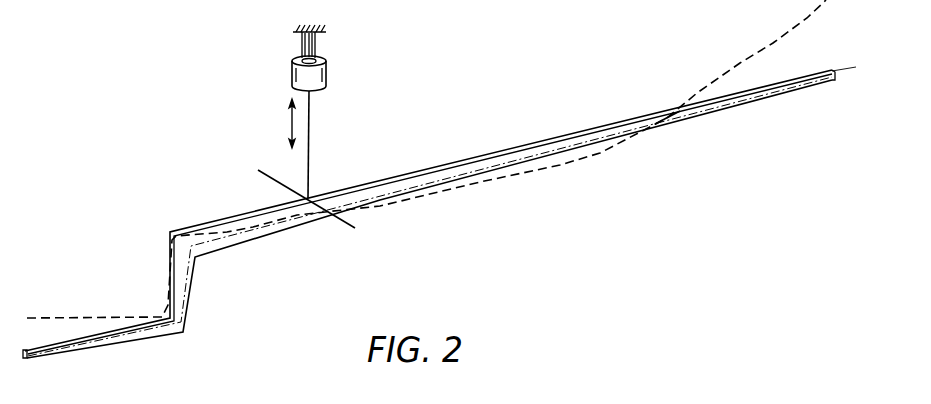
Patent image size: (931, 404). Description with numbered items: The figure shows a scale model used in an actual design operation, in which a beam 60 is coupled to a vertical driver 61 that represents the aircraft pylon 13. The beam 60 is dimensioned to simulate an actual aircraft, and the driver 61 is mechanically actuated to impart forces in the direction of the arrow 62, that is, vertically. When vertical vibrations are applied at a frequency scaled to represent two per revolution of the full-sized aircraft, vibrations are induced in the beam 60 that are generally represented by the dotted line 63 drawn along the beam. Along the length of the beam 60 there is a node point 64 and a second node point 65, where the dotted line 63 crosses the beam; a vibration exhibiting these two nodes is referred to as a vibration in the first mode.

The beam 60 is at (180, 231).
The vertical driver 61 is at (328, 72).
The pylon 13 is at (310, 122).
The arrow 62 is at (300, 122).
The dotted line 63 is at (502, 182).
The node point 64 is at (222, 236).
The node point 65 is at (667, 117).